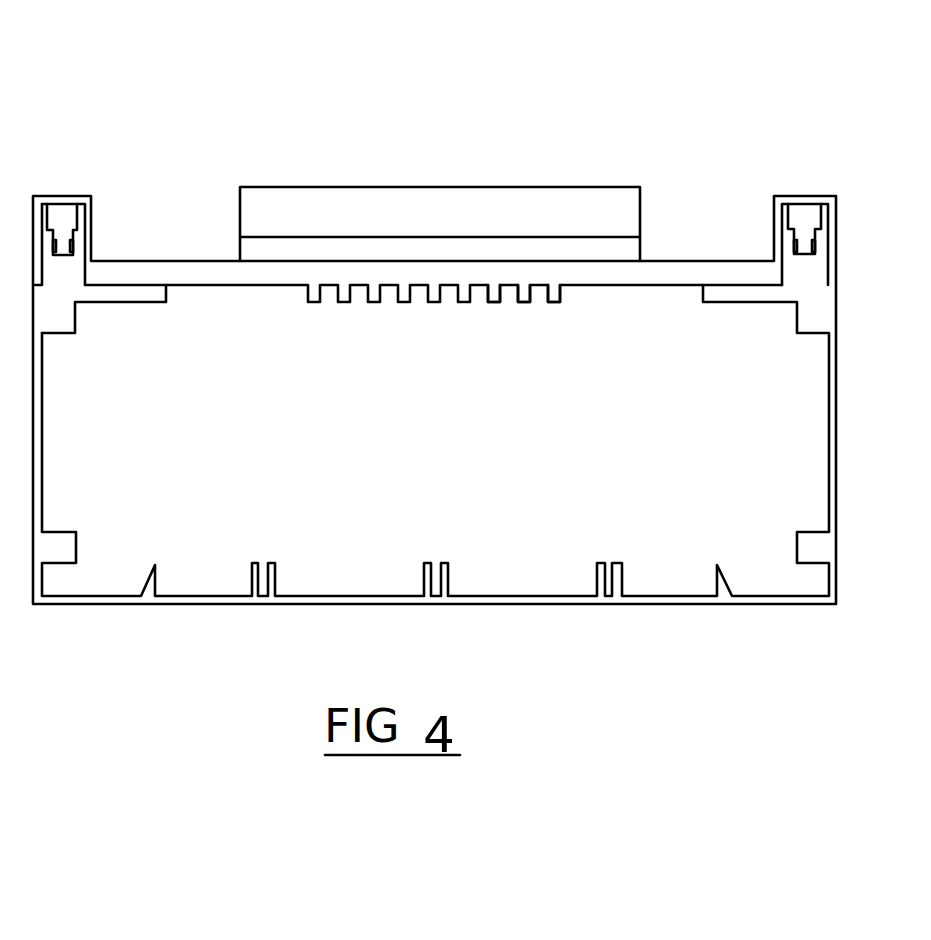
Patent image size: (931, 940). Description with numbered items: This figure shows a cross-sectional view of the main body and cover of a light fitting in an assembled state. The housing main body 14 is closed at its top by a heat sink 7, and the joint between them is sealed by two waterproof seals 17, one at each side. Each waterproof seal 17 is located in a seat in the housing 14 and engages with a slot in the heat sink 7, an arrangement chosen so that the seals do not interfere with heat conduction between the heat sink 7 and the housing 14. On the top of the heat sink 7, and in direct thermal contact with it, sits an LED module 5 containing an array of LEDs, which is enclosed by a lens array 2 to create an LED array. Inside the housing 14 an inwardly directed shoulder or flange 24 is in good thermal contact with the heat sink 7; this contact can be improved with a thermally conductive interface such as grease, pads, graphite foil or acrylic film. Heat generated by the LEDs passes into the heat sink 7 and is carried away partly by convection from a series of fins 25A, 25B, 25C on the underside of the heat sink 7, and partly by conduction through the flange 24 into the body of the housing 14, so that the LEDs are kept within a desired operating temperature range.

The lens array 2 is at (612, 213).
The LED module 5 is at (253, 250).
The heat sink 7 is at (233, 277).
The housing main body 14 is at (41, 438).
The waterproof seal 17 is at (58, 222).
The inwardly directed shoulder or flange 24 is at (118, 295).
The fin 25A is at (558, 295).
The fin 25B is at (521, 297).
The fin 25C is at (490, 299).